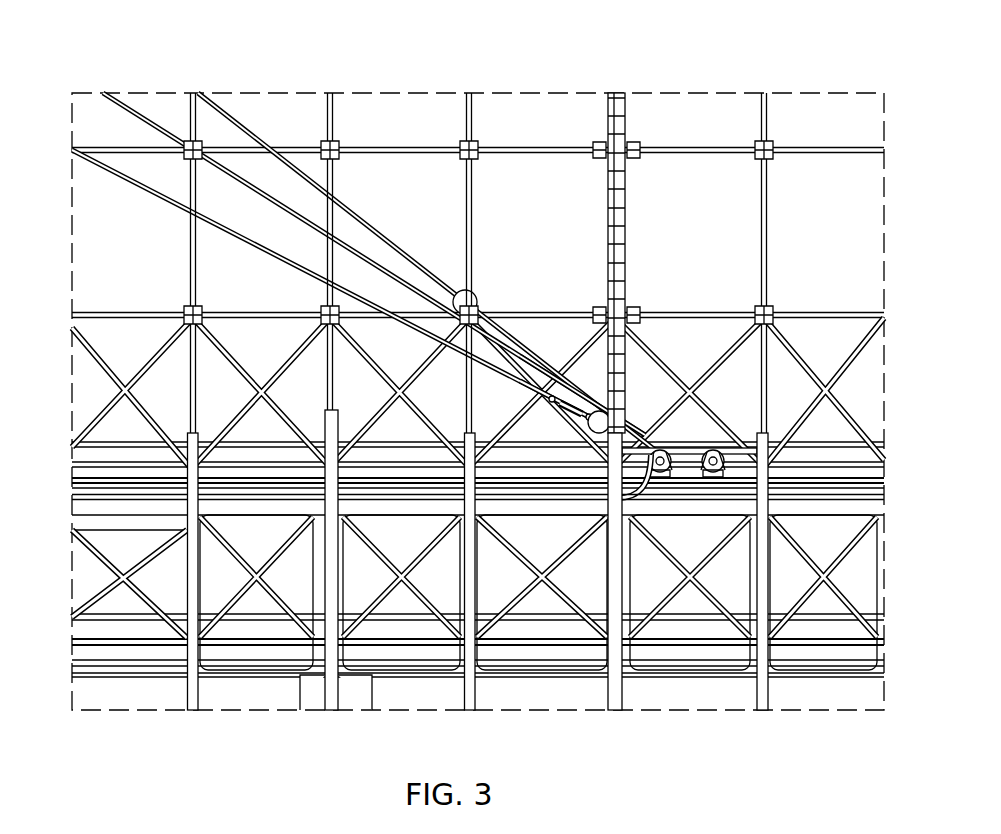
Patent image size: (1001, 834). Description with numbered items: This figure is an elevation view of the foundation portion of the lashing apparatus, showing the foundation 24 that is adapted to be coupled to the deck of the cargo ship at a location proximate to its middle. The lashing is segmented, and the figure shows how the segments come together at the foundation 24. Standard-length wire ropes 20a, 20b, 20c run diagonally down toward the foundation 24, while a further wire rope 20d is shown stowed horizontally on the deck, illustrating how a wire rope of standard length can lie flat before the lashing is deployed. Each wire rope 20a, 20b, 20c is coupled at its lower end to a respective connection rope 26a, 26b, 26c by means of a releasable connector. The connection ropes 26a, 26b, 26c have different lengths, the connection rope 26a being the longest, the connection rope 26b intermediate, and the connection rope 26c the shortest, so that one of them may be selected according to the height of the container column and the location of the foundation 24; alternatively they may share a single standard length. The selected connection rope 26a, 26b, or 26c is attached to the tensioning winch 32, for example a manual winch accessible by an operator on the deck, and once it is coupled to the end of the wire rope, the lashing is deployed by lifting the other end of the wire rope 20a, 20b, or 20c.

The wire rope 20a is at (283, 152).
The wire rope 20b is at (282, 203).
The wire rope 20c is at (302, 262).
The wire rope 20d is at (217, 497).
The connection rope 26a is at (512, 328).
The connection rope 26b is at (575, 390).
The connection rope 26c is at (630, 427).
The tensioning winch 32 is at (727, 425).
The foundation 24 is at (685, 475).